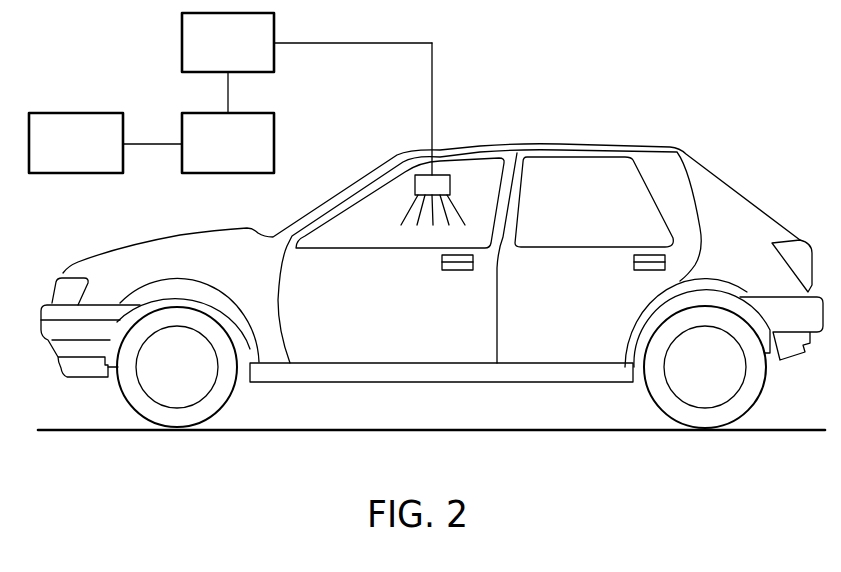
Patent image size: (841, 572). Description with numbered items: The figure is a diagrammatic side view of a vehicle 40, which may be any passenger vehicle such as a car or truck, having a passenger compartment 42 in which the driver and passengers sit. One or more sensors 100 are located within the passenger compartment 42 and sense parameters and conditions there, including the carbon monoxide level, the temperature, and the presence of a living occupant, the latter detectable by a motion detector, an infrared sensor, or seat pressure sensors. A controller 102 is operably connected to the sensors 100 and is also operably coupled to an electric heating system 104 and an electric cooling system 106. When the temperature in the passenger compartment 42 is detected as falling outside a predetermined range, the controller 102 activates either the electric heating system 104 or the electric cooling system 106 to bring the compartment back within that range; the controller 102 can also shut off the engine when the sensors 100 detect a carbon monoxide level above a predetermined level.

The vehicle 40 is at (539, 146).
The passenger compartment 42 is at (597, 184).
The sensors 100 is at (439, 184).
The controller 102 is at (248, 55).
The electric heating system 104 is at (96, 155).
The electric cooling system 106 is at (248, 155).